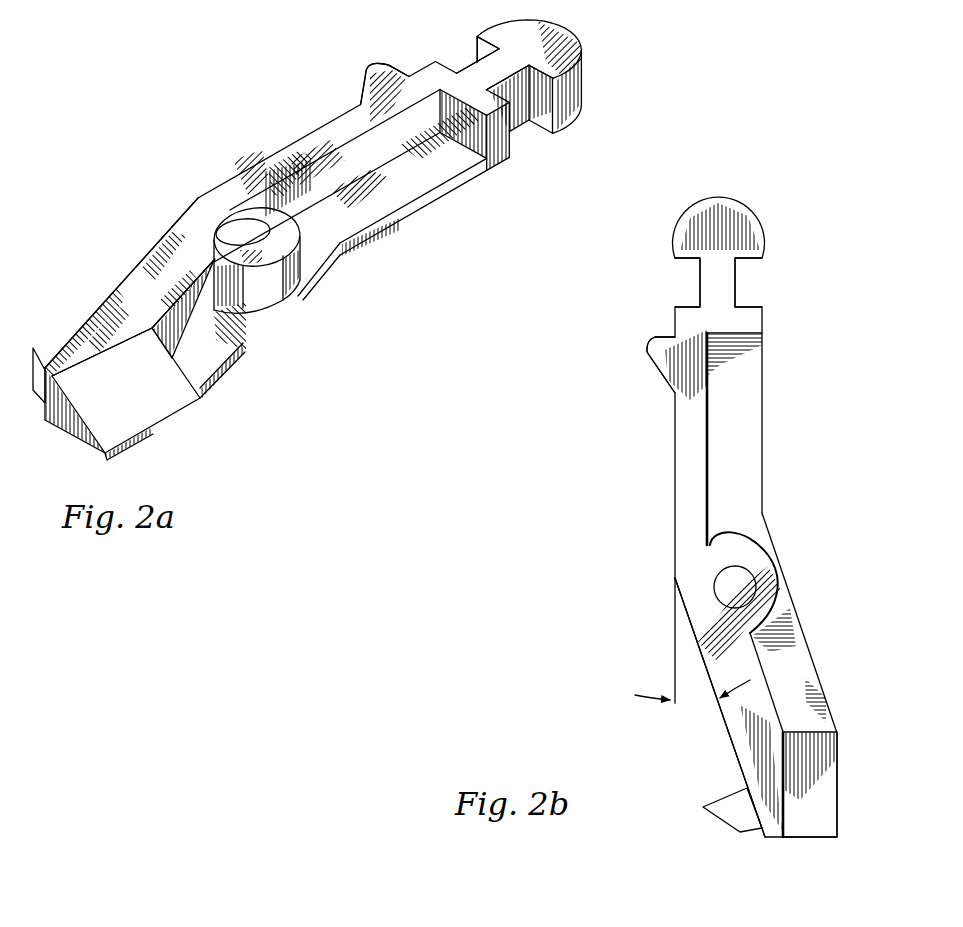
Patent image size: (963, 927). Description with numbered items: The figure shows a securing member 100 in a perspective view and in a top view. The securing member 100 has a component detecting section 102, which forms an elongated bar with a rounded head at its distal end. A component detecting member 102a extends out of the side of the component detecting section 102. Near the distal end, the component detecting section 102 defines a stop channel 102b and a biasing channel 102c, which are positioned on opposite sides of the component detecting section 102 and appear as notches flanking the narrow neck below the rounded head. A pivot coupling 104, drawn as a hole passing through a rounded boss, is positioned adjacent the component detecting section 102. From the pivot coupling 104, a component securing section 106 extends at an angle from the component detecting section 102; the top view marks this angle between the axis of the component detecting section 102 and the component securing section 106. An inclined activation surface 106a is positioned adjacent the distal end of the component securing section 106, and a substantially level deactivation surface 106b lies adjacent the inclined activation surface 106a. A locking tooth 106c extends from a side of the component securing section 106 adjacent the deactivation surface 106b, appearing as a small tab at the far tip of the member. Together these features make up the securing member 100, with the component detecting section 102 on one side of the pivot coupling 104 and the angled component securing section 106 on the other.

In FIG. 2A, the securing member 100 is at (118, 102).
In FIG. 2B, the securing member 100 is at (575, 470).
In FIG. 2A, the component detecting section 102 is at (654, 136).
In FIG. 2B, the component detecting section 102 is at (823, 200).
In FIG. 2A, the component detecting member 102a is at (367, 73).
In FIG. 2B, the component detecting member 102a is at (650, 343).
In FIG. 2A, the stop channel 102b is at (468, 66).
In FIG. 2B, the stop channel 102b is at (700, 290).
In FIG. 2A, the biasing channel 102c is at (518, 117).
In FIG. 2B, the biasing channel 102c is at (736, 288).
In FIG. 2A, the pivot coupling 104 is at (232, 230).
In FIG. 2B, the pivot coupling 104 is at (738, 580).
In FIG. 2A, the component securing section 106 is at (369, 302).
In FIG. 2B, the component securing section 106 is at (622, 612).
In FIG. 2A, the inclined activation surface 106a is at (138, 402).
In FIG. 2B, the inclined activation surface 106a is at (807, 823).
In FIG. 2A, the deactivation surface 106b is at (140, 278).
In FIG. 2B, the deactivation surface 106b is at (733, 730).
In FIG. 2A, the locking tooth 106c is at (45, 356).
In FIG. 2B, the locking tooth 106c is at (717, 818).